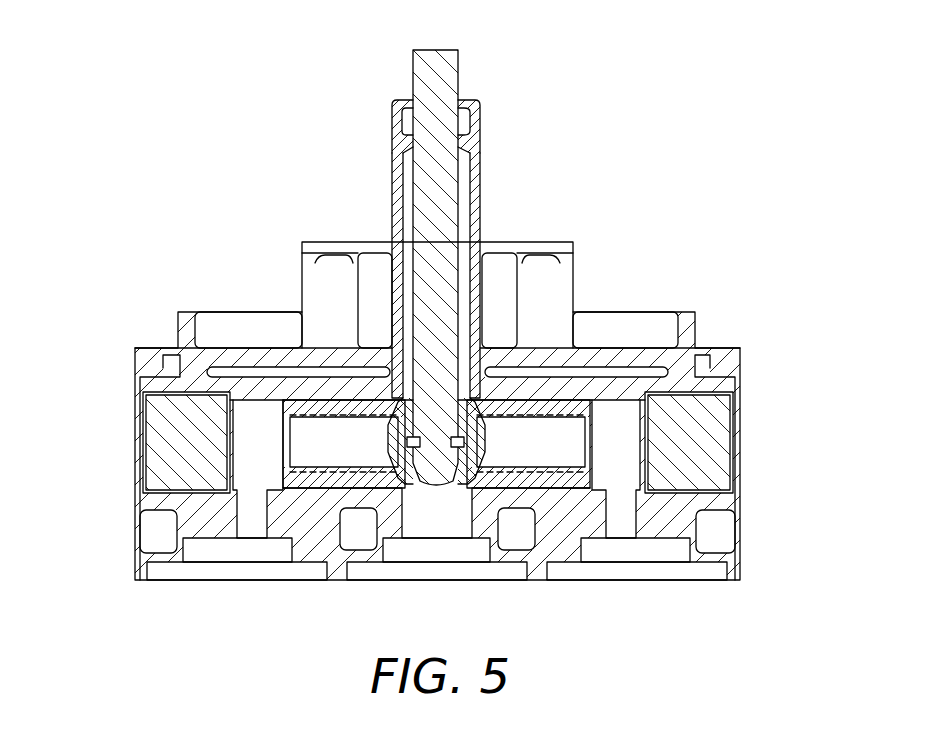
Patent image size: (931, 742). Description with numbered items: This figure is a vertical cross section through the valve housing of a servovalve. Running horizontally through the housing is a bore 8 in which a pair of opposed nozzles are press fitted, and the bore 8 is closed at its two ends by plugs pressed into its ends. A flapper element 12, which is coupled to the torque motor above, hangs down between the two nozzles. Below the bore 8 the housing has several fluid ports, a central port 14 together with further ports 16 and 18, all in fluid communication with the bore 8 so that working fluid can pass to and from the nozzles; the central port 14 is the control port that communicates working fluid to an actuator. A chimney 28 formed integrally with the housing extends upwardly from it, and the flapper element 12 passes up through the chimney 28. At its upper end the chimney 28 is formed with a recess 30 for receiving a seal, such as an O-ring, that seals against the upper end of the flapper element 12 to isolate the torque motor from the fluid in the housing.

The bore 8 is at (258, 410).
The flapper element 12 is at (455, 65).
The central port 14 is at (437, 548).
The fluid port 16 is at (240, 548).
The fluid port 18 is at (625, 548).
The chimney 28 is at (478, 192).
The recess 30 is at (470, 117).